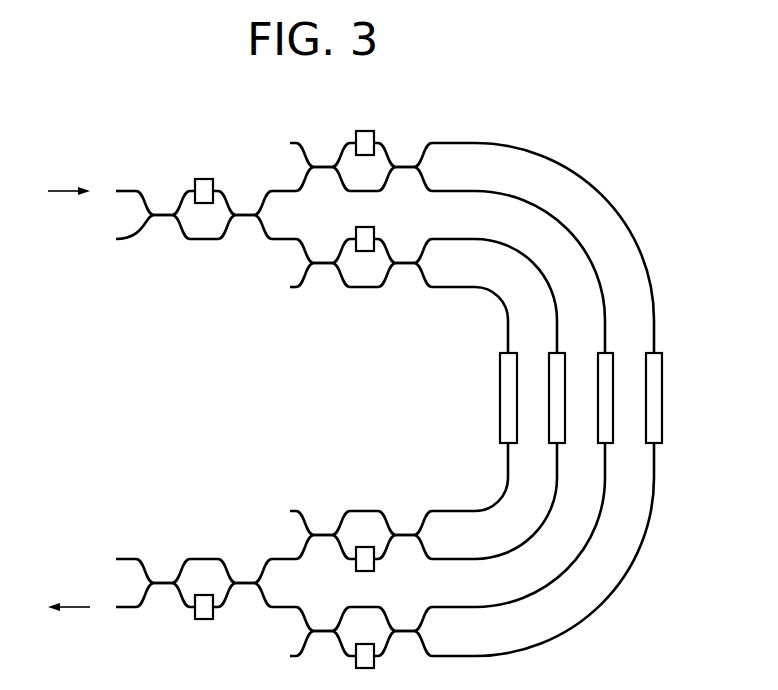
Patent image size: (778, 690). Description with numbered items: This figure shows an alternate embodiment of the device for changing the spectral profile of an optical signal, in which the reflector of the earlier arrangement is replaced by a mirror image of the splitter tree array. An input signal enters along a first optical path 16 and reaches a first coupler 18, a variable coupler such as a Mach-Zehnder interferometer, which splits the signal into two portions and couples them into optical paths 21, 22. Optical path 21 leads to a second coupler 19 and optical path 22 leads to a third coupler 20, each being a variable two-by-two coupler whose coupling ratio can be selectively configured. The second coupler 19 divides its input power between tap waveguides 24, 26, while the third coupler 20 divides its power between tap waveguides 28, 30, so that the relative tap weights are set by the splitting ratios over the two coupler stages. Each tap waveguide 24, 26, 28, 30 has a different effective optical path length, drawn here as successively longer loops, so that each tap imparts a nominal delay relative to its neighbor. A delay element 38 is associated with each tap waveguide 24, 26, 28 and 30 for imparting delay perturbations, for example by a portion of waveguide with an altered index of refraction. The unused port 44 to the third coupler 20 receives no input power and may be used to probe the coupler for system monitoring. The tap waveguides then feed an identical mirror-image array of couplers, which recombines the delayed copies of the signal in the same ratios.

The first optical path 16 is at (120, 190).
The first coupler 18 is at (222, 178).
The second coupler 19 is at (358, 124).
The third coupler 20 is at (351, 229).
The optical path 21 is at (280, 191).
The optical path 22 is at (260, 240).
The tap waveguide 24 is at (455, 143).
The tap waveguide 26 is at (455, 191).
The tap waveguide 28 is at (455, 239).
The tap waveguide 30 is at (455, 287).
The delay element 38 is at (500, 414).
The port 44 is at (300, 287).